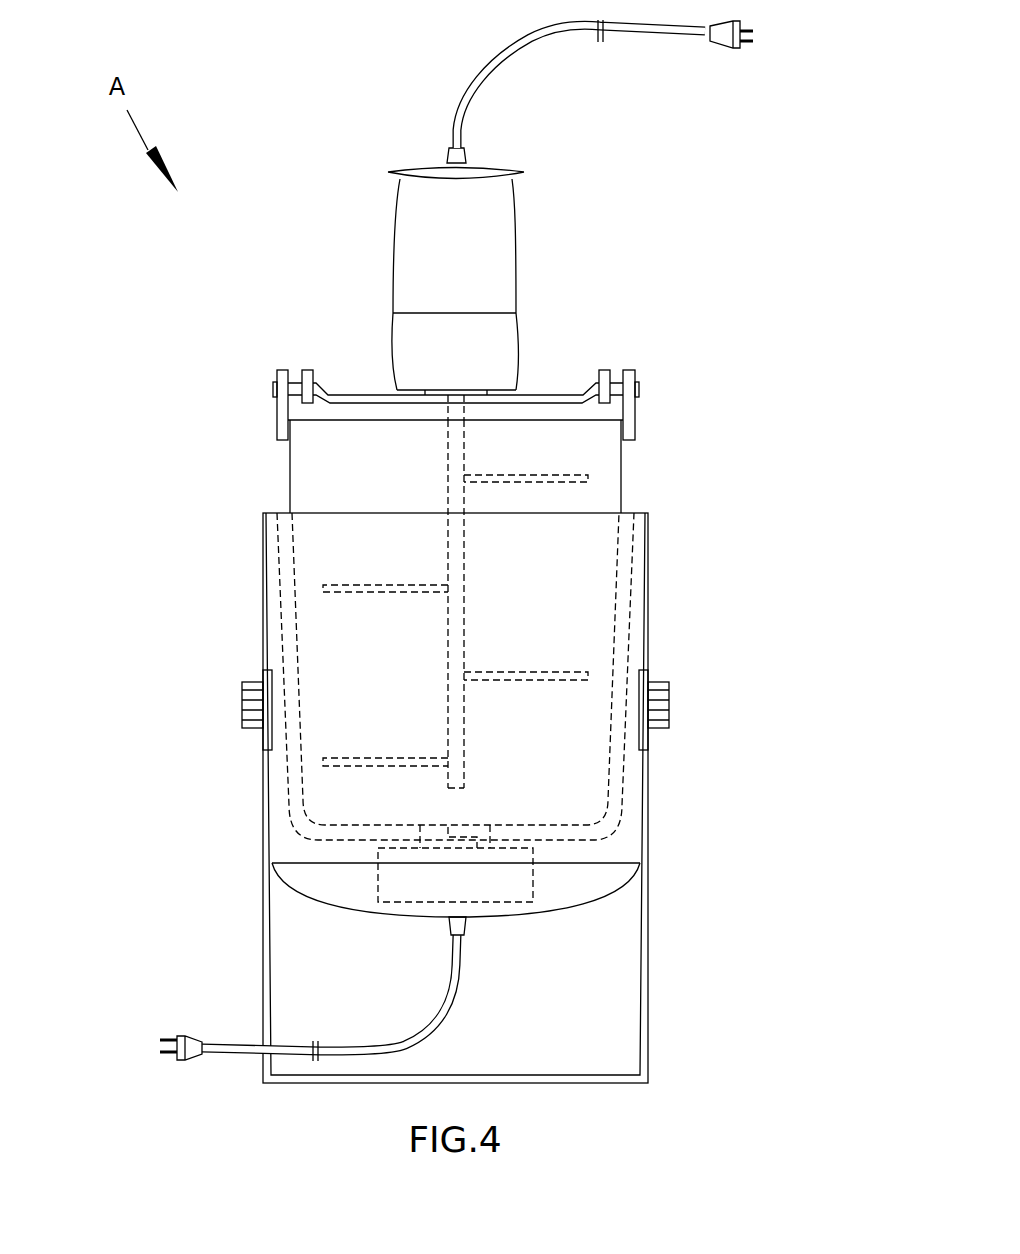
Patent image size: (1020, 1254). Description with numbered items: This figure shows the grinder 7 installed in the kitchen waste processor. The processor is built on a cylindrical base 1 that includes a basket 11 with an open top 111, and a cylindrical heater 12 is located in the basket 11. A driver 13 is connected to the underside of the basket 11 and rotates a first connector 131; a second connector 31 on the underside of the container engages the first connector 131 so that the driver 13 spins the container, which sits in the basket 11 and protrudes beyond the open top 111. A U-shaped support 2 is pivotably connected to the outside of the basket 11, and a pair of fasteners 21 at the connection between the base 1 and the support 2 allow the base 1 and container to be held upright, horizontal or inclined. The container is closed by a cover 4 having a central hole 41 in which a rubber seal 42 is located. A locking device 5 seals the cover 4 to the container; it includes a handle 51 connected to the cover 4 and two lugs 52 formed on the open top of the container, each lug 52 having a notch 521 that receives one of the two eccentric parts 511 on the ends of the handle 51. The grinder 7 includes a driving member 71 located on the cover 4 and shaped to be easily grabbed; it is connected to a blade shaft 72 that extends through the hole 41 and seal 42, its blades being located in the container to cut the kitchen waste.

The base 1 is at (456, 672).
The basket 11 is at (626, 618).
The heater 12 is at (283, 618).
The open top 111 is at (632, 513).
The driver 13 is at (378, 875).
The first connector 131 is at (335, 833).
The support 2 is at (466, 798).
The fasteners 21 is at (242, 706).
The second connector 31 is at (600, 834).
The cover 4 is at (357, 592).
The hole 41 is at (447, 397).
The seal 42 is at (325, 458).
The locking device 5 is at (415, 344).
The handle 51 is at (374, 393).
The lugs 52 is at (415, 353).
The eccentric parts 511 is at (274, 389).
The notch 521 is at (613, 393).
The grinder 7 is at (409, 110).
The driving member 71 is at (517, 207).
The blade shaft 72 is at (463, 453).